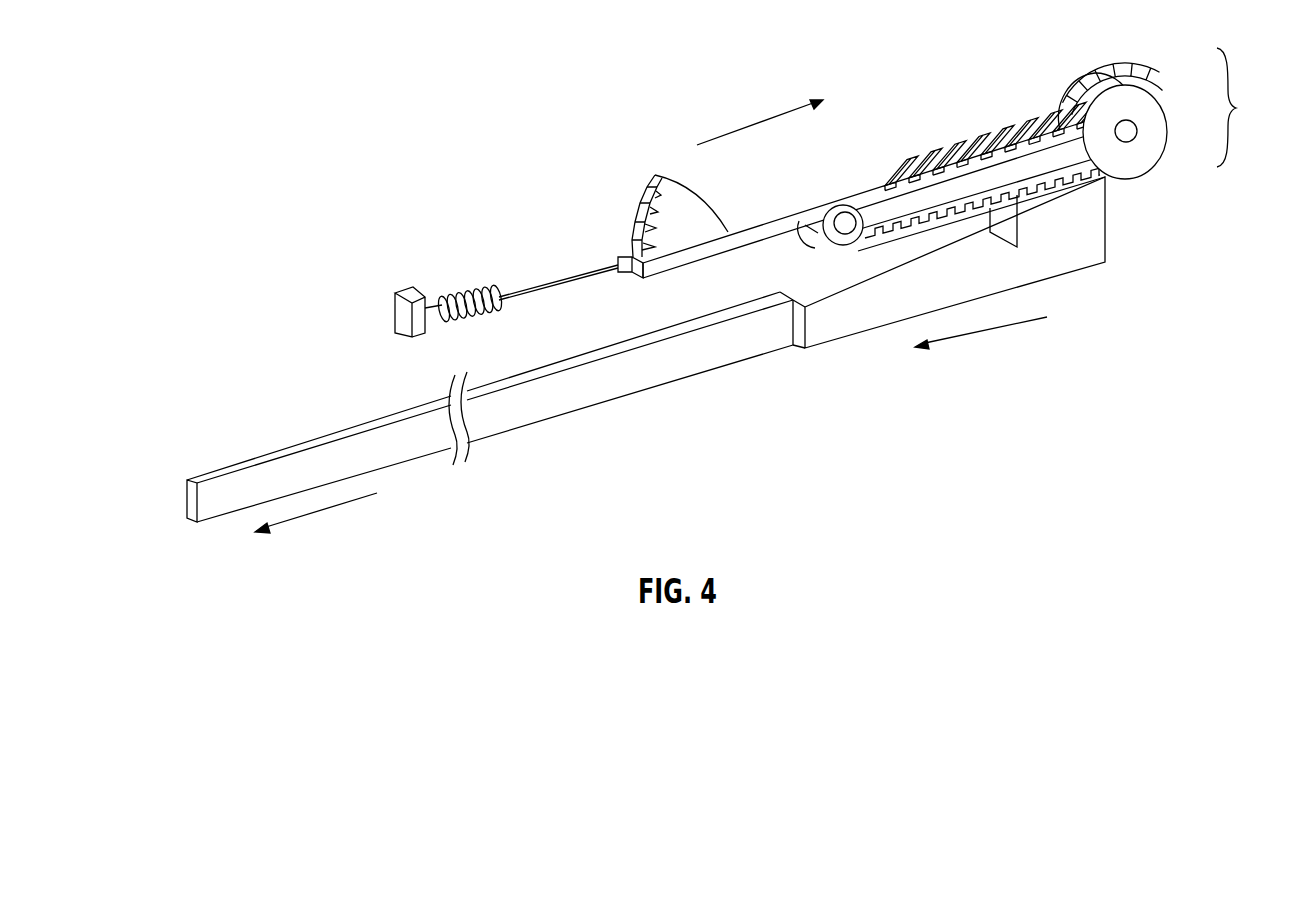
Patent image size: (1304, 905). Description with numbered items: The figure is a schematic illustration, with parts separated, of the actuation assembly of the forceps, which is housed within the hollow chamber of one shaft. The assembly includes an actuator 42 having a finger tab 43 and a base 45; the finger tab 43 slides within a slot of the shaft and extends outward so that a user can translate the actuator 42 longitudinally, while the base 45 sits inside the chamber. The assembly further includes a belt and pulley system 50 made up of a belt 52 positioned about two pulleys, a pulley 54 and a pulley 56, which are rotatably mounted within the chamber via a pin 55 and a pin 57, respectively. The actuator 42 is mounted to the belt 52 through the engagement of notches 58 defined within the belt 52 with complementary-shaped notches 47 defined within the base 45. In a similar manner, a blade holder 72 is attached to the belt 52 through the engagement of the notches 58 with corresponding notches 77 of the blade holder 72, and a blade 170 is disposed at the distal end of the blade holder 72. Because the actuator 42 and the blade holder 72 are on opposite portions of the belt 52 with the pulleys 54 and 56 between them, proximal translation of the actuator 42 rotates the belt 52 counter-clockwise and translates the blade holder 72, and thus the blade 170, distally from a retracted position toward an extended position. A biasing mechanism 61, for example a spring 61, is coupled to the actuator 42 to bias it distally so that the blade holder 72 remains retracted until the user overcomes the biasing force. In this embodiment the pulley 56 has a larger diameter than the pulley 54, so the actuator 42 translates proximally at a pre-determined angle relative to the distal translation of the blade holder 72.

The actuator 42 is at (650, 212).
The finger tab 43 is at (638, 224).
The base 45 is at (793, 200).
The notches 47 is at (868, 200).
The belt and pulley system 50 is at (1241, 107).
The belt 52 is at (1009, 114).
The pulley 54 is at (807, 249).
The pin 55 is at (845, 235).
The pulley 56 is at (1135, 136).
The pin 57 is at (1128, 138).
The notches 58 is at (985, 120).
The biasing mechanism 61 is at (463, 297).
The blade holder 72 is at (1070, 262).
The notches 77 is at (1055, 188).
The blade 170 is at (650, 372).